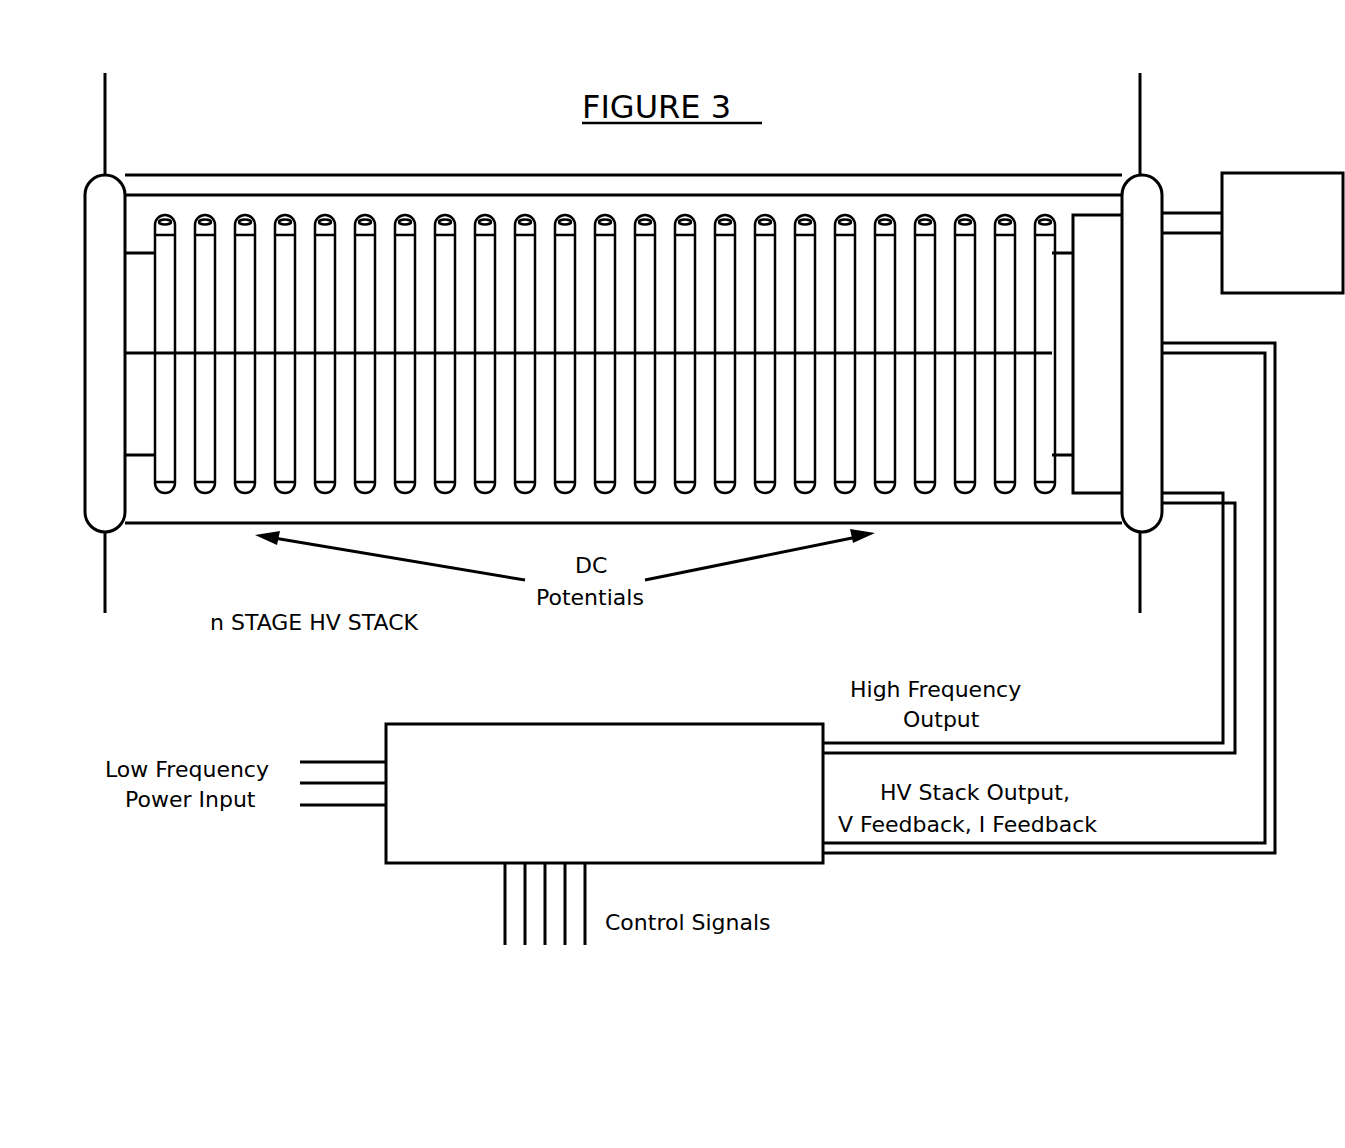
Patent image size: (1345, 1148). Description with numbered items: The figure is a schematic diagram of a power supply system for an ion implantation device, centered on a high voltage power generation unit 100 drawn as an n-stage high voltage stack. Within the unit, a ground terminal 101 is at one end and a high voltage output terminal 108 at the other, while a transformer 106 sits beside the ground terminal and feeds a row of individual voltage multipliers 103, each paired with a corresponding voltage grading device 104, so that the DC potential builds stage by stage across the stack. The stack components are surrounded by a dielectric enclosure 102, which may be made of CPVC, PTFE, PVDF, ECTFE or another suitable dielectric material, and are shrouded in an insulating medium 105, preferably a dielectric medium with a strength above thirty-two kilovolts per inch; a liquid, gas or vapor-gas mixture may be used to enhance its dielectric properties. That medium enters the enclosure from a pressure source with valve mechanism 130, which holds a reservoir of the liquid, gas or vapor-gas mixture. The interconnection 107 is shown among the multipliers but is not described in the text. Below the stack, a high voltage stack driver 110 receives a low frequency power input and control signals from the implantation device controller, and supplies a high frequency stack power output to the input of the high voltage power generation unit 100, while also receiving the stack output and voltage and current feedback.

The high voltage power generation unit 100 is at (307, 99).
The ground terminal 101 is at (1160, 186).
The dielectric enclosure 102 is at (882, 194).
The voltage multiplier 103 is at (1006, 462).
The voltage grading device 104 is at (760, 212).
The insulating medium 105 is at (984, 210).
The transformer 106 is at (1098, 215).
The interconnection bus 107 is at (388, 348).
The high voltage output terminal 108 is at (94, 207).
The high voltage stack driver 110 is at (660, 723).
The pressure source with valve mechanism 130 is at (1300, 190).